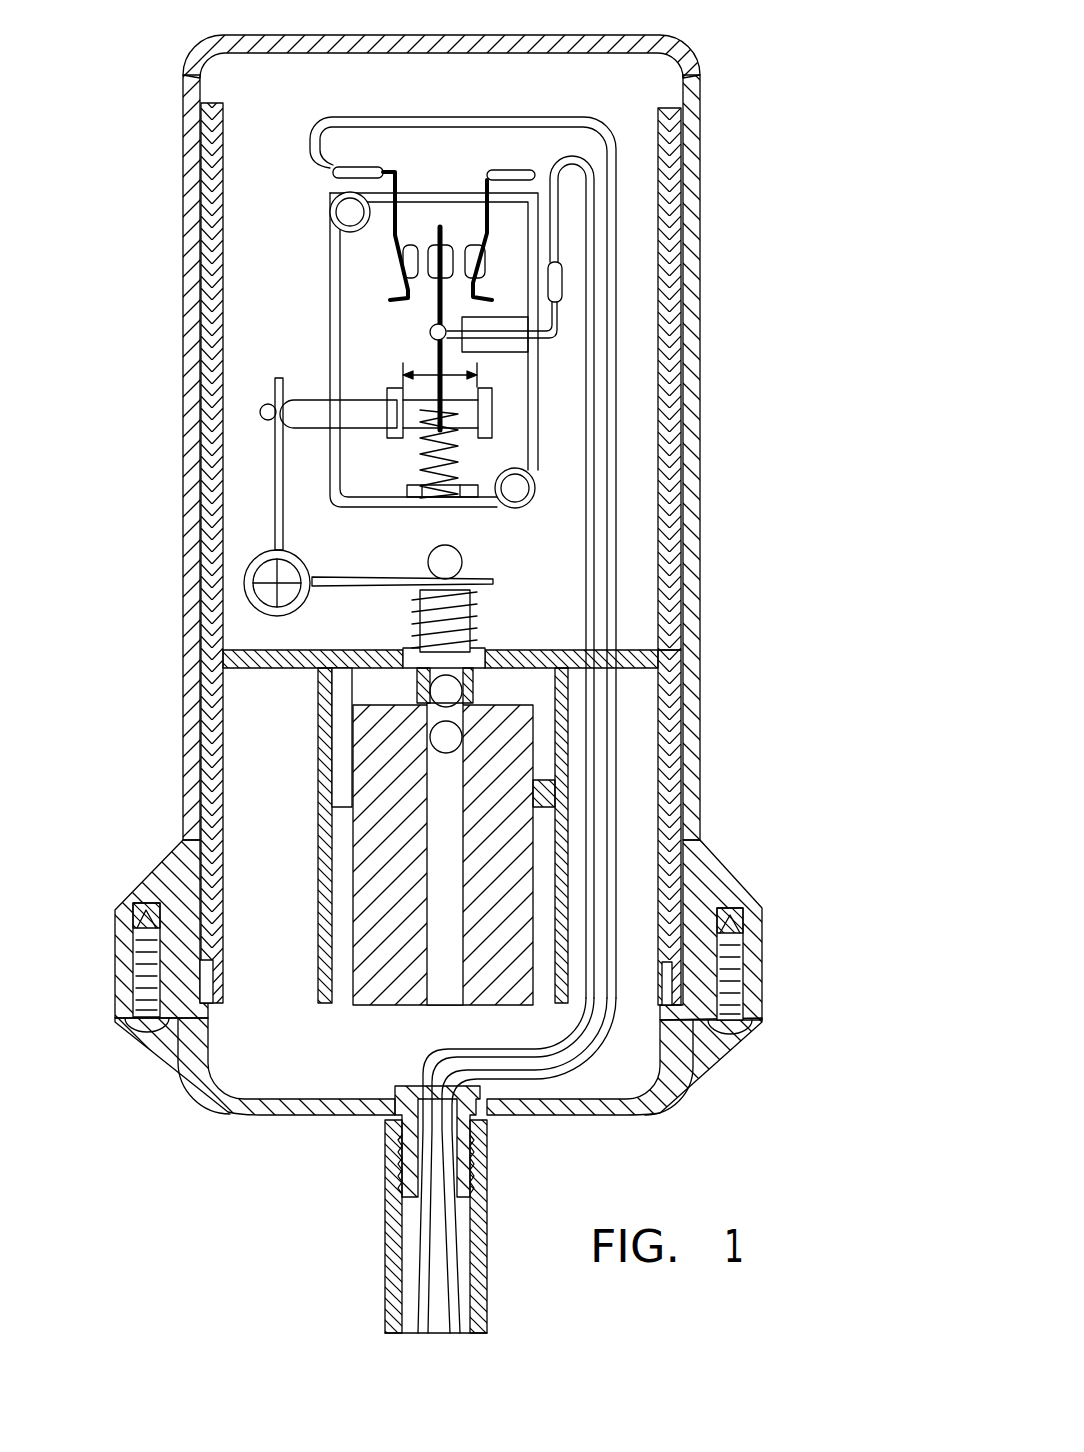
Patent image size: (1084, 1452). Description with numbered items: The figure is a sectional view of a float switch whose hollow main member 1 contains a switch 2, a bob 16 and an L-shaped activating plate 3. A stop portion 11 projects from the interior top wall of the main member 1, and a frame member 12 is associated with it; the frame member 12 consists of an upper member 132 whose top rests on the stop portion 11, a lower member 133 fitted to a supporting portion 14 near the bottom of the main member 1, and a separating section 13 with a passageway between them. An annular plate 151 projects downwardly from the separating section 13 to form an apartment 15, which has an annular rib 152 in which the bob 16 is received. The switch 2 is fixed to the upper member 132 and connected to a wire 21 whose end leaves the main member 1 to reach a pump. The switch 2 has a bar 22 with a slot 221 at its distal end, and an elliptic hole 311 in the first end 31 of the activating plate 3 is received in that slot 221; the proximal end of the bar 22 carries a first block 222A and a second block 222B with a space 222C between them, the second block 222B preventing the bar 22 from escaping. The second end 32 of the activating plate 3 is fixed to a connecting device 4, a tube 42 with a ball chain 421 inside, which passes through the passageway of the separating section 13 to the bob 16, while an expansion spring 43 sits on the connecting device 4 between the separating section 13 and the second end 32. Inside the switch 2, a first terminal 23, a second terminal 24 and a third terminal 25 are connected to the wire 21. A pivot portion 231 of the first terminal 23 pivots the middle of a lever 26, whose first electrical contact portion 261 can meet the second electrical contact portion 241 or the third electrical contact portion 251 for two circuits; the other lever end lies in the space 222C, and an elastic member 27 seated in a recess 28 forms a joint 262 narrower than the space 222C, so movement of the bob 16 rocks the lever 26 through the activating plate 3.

The main member 1 is at (693, 153).
The stop portion 11 is at (668, 57).
The frame member 12 is at (500, 554).
The upper member 132 is at (668, 236).
The lower member 133 is at (683, 742).
The separating section 13 is at (303, 668).
The supporting portion 14 is at (665, 975).
The apartment 15 is at (492, 866).
The annular plate 151 is at (563, 840).
The annular rib 152 is at (340, 790).
The bob 16 is at (392, 990).
The switch 2 is at (444, 695).
The wire 21 is at (462, 116).
The bar 22 is at (444, 388).
The slot 221 is at (280, 398).
The first block 222A is at (392, 405).
The second block 222B is at (492, 410).
The space 222C is at (403, 363).
The first terminal 23 is at (528, 338).
The pivot portion 231 is at (440, 298).
The second terminal 24 is at (506, 172).
The second electrical contact portion 241 is at (570, 268).
The third terminal 25 is at (392, 170).
The third electrical contact portion 251 is at (408, 270).
The lever 26 is at (428, 262).
The first electrical contact portion 261 is at (443, 227).
The joint 262 is at (536, 490).
The elastic member 27 is at (460, 492).
The recess 28 is at (430, 498).
The activating plate 3 is at (342, 497).
The first end 31 is at (275, 482).
The elliptic hole 311 is at (262, 412).
The second end 32 is at (493, 580).
The connecting device 4 is at (452, 670).
The tube 42 is at (415, 612).
The ball chain 421 is at (455, 690).
The expansion spring 43 is at (478, 606).